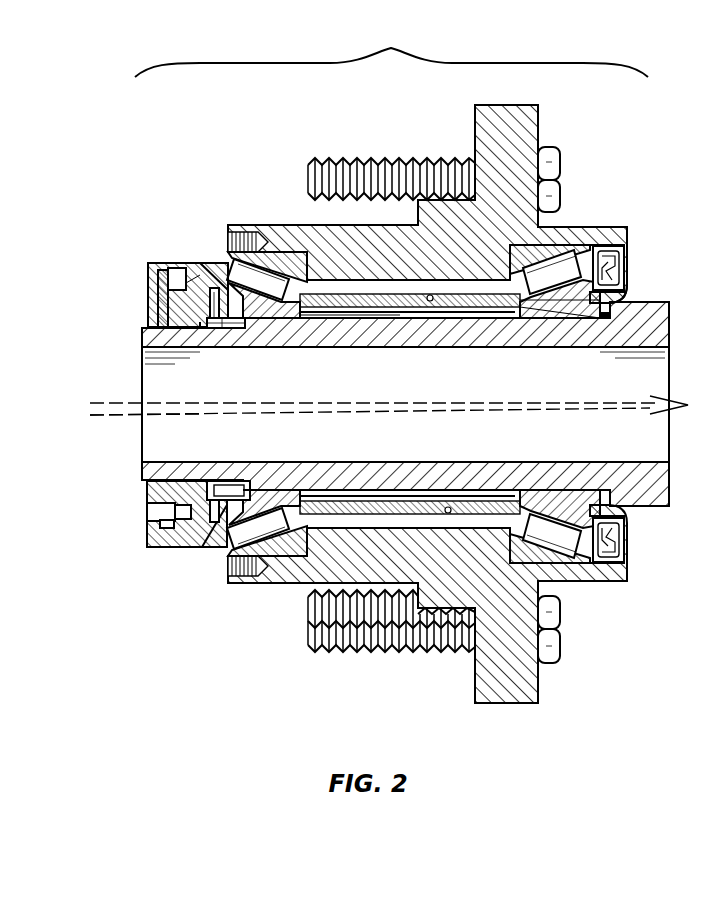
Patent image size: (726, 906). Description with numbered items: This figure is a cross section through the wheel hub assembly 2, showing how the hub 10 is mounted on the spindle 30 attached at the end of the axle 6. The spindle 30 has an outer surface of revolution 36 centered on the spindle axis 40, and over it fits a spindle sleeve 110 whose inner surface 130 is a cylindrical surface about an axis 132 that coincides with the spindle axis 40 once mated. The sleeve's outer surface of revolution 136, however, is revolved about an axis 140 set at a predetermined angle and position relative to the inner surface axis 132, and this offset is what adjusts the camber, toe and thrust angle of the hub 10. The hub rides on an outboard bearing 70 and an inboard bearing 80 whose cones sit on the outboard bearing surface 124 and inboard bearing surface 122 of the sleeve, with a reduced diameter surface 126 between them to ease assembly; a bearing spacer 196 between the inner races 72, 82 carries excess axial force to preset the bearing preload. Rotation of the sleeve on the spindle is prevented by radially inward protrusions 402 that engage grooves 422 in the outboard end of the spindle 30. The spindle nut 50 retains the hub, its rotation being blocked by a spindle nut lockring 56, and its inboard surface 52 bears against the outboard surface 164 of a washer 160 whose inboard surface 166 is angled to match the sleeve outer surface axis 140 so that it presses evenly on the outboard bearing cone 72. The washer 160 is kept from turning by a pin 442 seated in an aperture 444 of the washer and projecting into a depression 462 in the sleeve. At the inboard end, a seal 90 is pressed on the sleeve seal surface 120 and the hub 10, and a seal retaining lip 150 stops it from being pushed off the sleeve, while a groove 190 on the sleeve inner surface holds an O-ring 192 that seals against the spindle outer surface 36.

The wheel hub assembly 2 is at (391, 45).
The axle 6 is at (648, 504).
The hub 10 is at (492, 705).
The spindle 30 is at (517, 475).
The outer surface of revolution 36 is at (420, 318).
The axis 40 is at (105, 403).
The spindle nut 50 is at (165, 266).
The inboard surface 52 is at (205, 550).
The spindle nut lockring 56 is at (160, 288).
The outboard bearing 70 is at (258, 268).
The inner race of the outboard bearing 72 is at (292, 515).
The inboard bearing 80 is at (555, 267).
The bearing race 82 is at (600, 475).
The seal 90 is at (625, 268).
The spindle sleeve 110 is at (458, 312).
The spindle sleeve seal surface 120 is at (550, 314).
The inboard spindle sleeve bearing surface 122 is at (522, 310).
The outboard spindle sleeve bearing surface 124 is at (317, 312).
The reduced diameter surface 126 is at (422, 492).
The inner surface 130 is at (268, 320).
The axis 132 is at (128, 405).
The outer surface of revolution 136 is at (470, 490).
The axis 140 is at (108, 416).
The seal retaining lip 150 is at (626, 530).
The washer 160 is at (214, 264).
The outboard surface 164 is at (183, 548).
The inboard surface 166 is at (262, 495).
The groove 190 is at (628, 290).
The O-ring 192 is at (606, 320).
The bearing spacer 196 is at (350, 490).
The protrusion 402 is at (226, 483).
The groove 422 is at (213, 485).
The protrusion 442 is at (208, 330).
The aperture 444 is at (212, 298).
The depression 462 is at (240, 330).